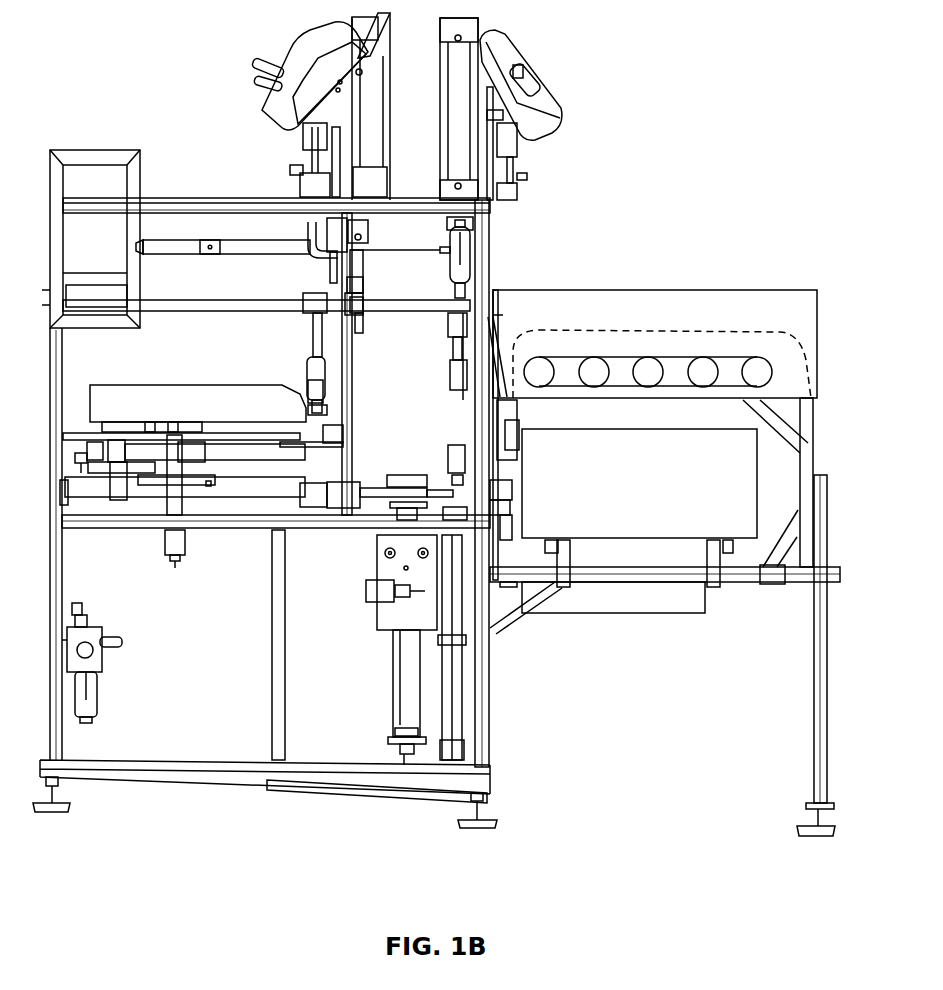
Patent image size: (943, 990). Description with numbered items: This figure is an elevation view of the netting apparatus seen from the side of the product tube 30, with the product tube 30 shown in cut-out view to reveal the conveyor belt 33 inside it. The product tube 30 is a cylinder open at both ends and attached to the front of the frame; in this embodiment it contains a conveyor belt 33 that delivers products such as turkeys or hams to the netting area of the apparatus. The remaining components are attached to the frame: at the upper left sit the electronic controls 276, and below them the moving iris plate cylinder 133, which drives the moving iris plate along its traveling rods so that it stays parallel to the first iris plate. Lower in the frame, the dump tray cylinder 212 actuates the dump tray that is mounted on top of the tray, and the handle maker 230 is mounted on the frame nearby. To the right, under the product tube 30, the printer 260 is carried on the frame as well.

The electronic controls 276 is at (92, 177).
The moving iris plate cylinder 133 is at (252, 244).
The dump tray cylinder 212 is at (185, 541).
The handle maker 230 is at (368, 619).
The product tube 30 is at (716, 300).
The conveyor belt 33 is at (620, 353).
The printer 260 is at (661, 494).